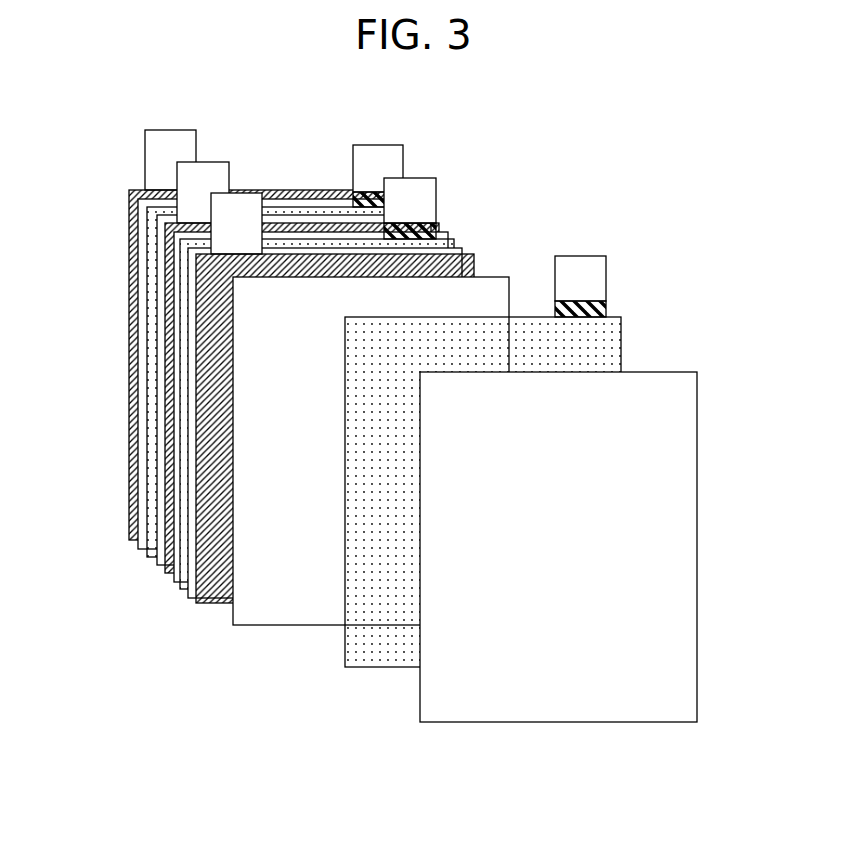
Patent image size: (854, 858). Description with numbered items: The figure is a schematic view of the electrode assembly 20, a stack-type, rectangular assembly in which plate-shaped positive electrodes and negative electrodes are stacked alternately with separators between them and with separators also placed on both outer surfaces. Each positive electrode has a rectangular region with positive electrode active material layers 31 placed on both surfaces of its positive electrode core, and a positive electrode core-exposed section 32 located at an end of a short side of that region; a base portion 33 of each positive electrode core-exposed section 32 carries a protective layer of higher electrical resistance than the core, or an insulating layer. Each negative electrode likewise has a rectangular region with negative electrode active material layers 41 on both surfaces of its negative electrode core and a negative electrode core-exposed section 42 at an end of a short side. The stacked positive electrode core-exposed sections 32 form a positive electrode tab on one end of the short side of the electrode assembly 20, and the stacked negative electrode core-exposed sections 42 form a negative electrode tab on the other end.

The electrode assembly 20 is at (566, 114).
The positive electrode active material layer 31 is at (612, 340).
The positive electrode core-exposed section 32 is at (598, 268).
The base portion 33 is at (600, 309).
The negative electrode active material layer 41 is at (129, 221).
The negative electrode core-exposed section 42 is at (170, 136).